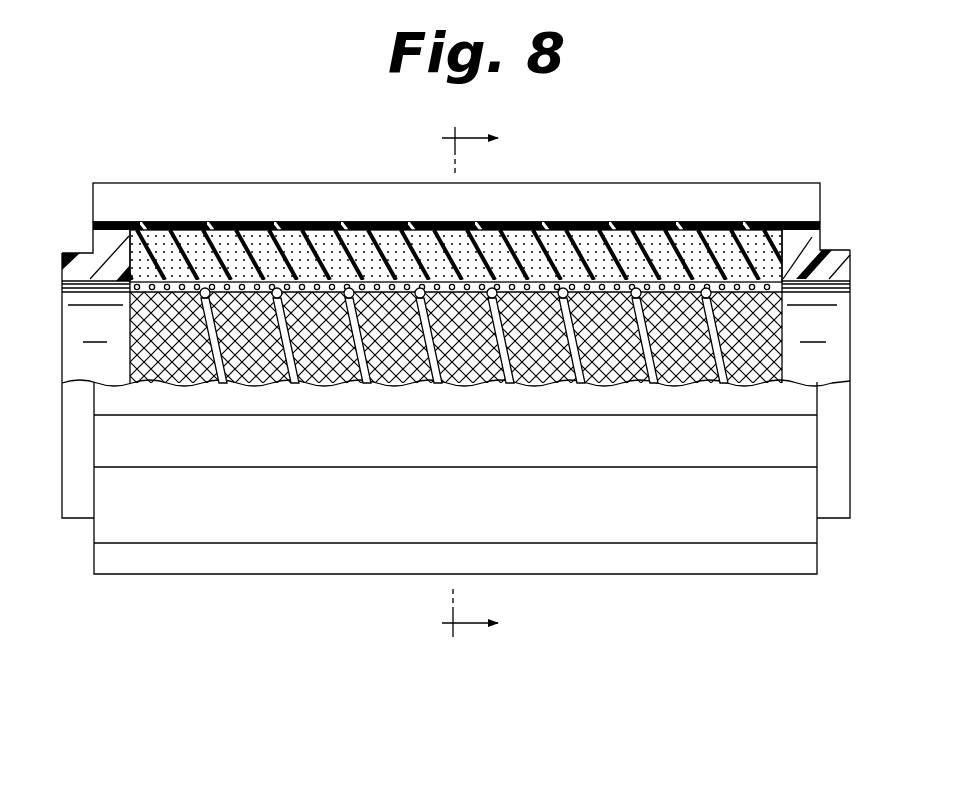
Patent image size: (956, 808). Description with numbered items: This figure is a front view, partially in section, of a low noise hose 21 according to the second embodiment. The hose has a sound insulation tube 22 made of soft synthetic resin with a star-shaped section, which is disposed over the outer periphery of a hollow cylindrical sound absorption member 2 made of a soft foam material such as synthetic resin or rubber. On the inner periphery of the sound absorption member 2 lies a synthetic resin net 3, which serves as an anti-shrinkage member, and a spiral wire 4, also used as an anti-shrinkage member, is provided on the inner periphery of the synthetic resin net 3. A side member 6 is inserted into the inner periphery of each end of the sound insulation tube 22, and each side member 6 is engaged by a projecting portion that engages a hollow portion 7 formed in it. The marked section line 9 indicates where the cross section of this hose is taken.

The sound absorption member 2 is at (340, 243).
The synthetic resin net 3 is at (128, 298).
The spiral wire 4 is at (215, 357).
The side member 6 is at (66, 253).
The hollow portion 7 is at (116, 213).
The low noise hose 21 is at (217, 178).
The sound insulation tube 22 is at (590, 207).
The section line 9- 9 is at (484, 381).